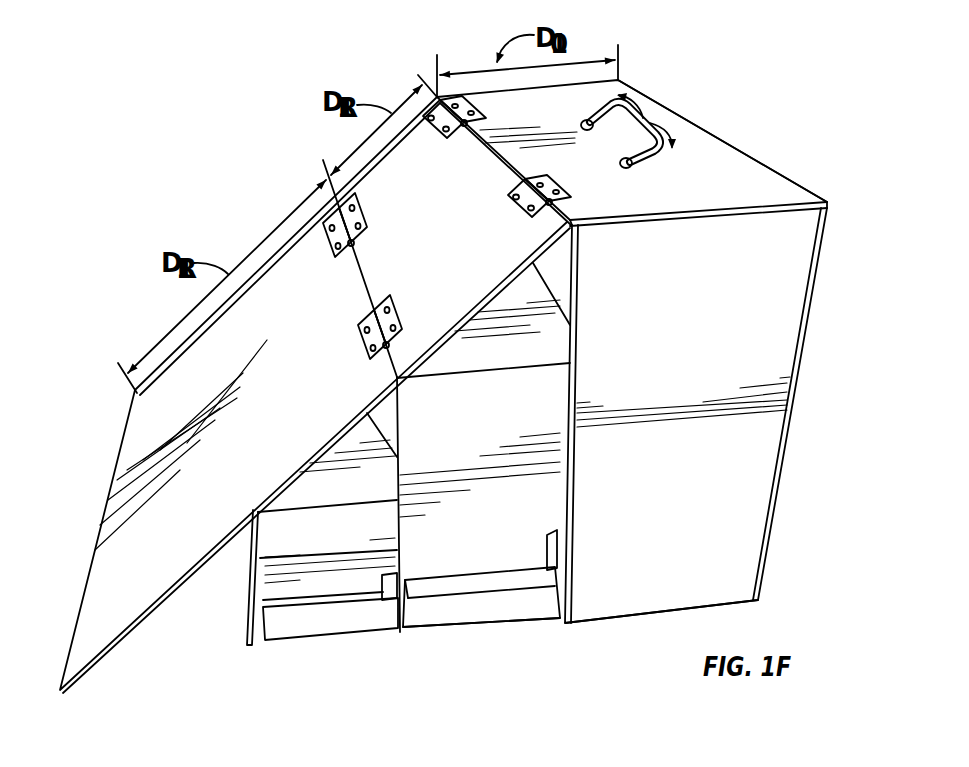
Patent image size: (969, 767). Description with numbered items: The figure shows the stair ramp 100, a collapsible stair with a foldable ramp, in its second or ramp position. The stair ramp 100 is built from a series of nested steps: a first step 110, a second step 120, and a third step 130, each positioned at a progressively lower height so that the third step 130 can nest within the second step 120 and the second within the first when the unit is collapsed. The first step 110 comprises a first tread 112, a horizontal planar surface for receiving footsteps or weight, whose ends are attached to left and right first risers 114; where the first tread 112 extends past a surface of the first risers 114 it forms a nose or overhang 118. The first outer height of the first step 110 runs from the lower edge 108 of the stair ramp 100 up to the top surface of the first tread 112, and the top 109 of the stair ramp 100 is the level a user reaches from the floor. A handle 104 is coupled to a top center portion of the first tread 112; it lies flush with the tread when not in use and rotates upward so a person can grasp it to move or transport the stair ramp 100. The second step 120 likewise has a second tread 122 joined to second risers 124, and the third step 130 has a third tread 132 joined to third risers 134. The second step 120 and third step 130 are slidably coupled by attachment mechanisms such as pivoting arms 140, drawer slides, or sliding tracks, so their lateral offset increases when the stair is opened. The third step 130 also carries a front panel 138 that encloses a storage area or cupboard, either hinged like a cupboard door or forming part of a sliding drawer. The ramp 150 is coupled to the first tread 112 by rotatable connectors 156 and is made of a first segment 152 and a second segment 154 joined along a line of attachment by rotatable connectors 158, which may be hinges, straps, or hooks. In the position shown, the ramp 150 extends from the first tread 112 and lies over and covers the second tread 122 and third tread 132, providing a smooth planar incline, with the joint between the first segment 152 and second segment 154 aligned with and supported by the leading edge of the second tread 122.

The stair ramp 100 is at (744, 112).
The handle 104 is at (643, 122).
The lower edge 108 is at (712, 598).
The top 109 is at (773, 197).
The first step 110 is at (714, 415).
The first tread 112 is at (709, 187).
The first risers 114 is at (696, 528).
The overhang 118 is at (571, 238).
The second step 120 is at (529, 631).
The second tread 122 is at (525, 364).
The second risers 124 is at (493, 540).
The third step 130 is at (300, 642).
The third tread 132 is at (356, 495).
The third risers 134 is at (338, 542).
The front panel 138 is at (243, 597).
The pivoting arms 140 is at (505, 583).
The ramp 150 is at (315, 395).
The first segment 152 is at (459, 228).
The second segment 154 is at (309, 397).
The rotatable connectors 156 is at (468, 100).
The rotatable connectors 158 is at (373, 208).